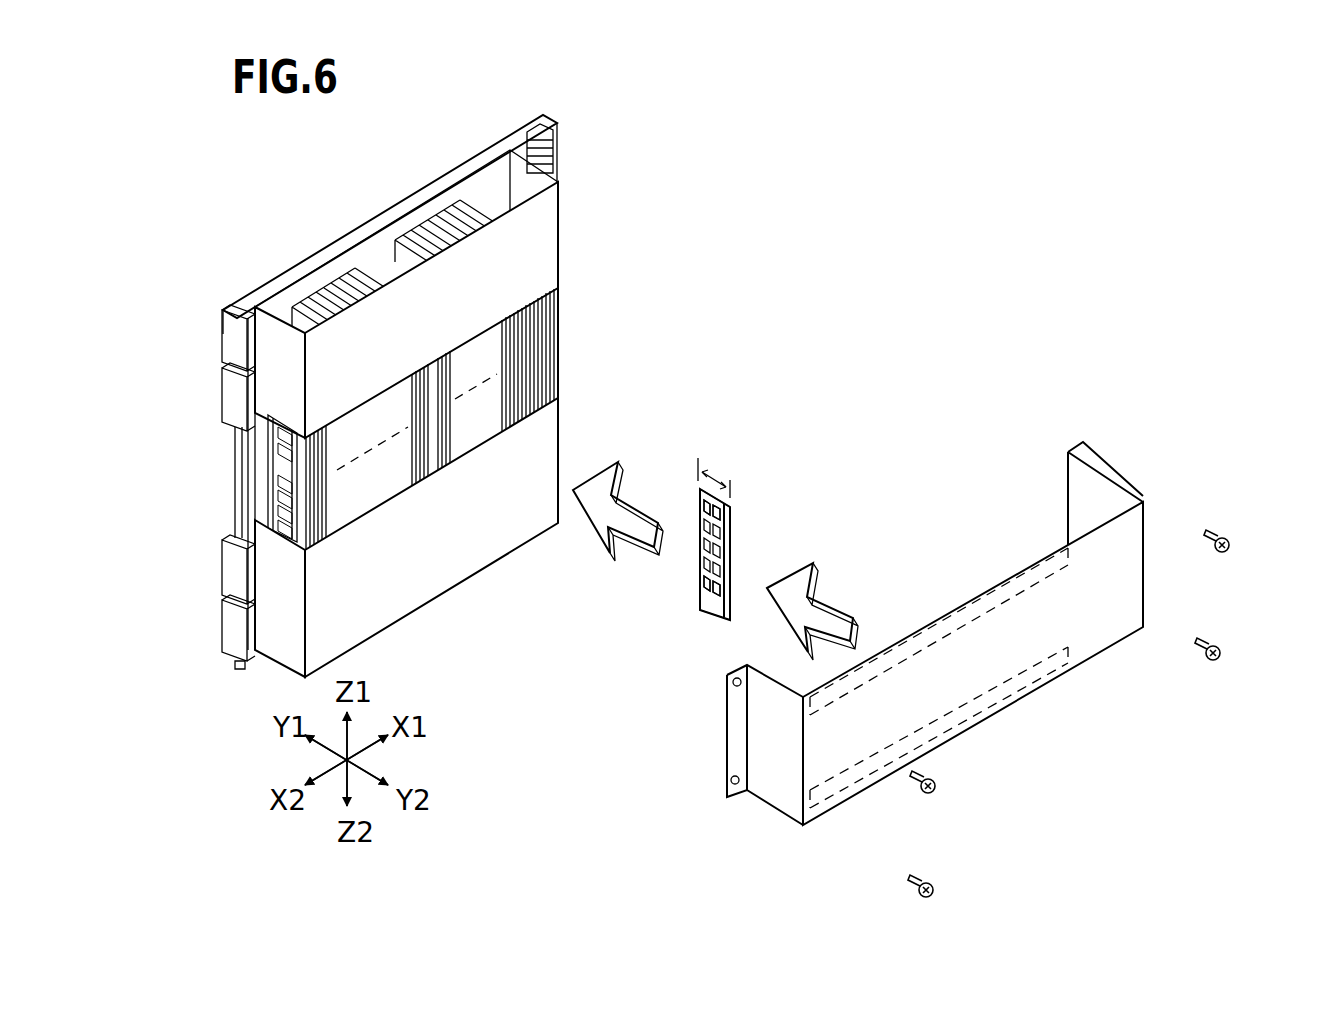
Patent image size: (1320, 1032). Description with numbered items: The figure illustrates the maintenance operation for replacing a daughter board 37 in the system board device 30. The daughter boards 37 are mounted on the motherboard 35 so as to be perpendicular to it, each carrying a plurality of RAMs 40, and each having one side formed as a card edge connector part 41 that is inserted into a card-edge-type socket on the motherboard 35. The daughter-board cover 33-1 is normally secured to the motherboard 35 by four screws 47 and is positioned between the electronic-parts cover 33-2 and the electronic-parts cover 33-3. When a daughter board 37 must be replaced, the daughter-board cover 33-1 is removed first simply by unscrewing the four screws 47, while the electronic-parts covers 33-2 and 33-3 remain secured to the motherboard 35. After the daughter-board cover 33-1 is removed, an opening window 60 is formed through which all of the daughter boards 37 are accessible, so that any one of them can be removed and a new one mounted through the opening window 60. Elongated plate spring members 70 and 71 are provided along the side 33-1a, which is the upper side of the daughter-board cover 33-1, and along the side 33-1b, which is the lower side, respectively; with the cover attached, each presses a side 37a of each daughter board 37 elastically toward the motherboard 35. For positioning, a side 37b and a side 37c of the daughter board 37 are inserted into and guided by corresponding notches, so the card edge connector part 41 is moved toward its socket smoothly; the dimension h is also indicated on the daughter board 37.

The system board device 30 is at (803, 119).
The motherboard 35 is at (474, 154).
The daughter-board cover 33-1 is at (982, 609).
The side of daughter-board cover 33-1a is at (983, 593).
The side of daughter-board cover 33-1b is at (1057, 675).
The electronic-parts cover 33-2 is at (553, 214).
The electronic-parts cover 33-3 is at (556, 428).
The daughter board 37 is at (379, 494).
The side of daughter board 37a is at (732, 535).
The side of daughter board 37b is at (725, 498).
The side of daughter board 37c is at (710, 612).
The RAM 40 is at (700, 598).
The card edge connector part 41 is at (700, 500).
The screw 47 is at (1222, 536).
The opening window 60 is at (449, 467).
The elongated plate spring member 70 is at (933, 630).
The elongated plate spring member 71 is at (993, 707).
The height dimension h is at (706, 470).